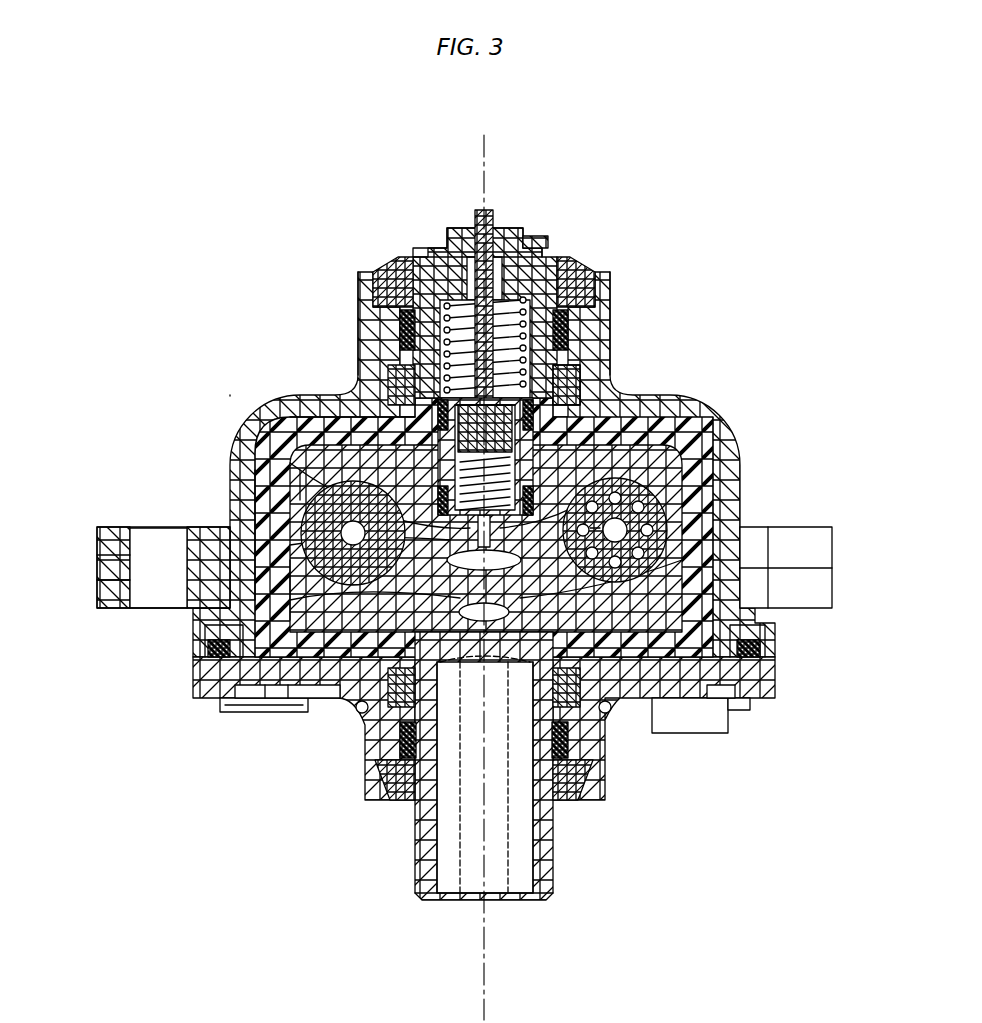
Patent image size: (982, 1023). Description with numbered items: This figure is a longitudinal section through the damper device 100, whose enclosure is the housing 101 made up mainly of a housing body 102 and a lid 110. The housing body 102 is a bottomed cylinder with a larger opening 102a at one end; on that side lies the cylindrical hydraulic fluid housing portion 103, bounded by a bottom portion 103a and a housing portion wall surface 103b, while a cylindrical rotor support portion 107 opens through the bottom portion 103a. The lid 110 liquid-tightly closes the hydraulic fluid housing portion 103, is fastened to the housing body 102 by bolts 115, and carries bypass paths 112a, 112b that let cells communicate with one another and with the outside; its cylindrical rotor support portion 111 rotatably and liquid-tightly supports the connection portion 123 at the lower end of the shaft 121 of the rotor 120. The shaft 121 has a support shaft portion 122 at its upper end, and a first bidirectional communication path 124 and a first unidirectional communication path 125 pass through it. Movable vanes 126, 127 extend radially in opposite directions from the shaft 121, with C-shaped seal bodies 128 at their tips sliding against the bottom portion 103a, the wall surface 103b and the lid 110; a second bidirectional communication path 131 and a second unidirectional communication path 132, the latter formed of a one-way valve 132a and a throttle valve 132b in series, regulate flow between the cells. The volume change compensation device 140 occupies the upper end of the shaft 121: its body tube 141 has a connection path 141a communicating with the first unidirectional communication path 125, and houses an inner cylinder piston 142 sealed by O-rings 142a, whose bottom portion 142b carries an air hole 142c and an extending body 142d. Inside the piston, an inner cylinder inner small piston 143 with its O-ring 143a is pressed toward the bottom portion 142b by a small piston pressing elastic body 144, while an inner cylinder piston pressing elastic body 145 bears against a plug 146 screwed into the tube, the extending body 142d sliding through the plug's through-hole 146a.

The damper device 100 is at (226, 214).
The housing 101 is at (387, 536).
The housing body 102 is at (198, 645).
The opening 102a is at (283, 682).
The hydraulic fluid housing portion 103 is at (760, 640).
The bottom portion 103a is at (330, 424).
The housing portion wall surface 103b is at (272, 530).
The rotor support portion 107 is at (360, 287).
The lid 110 is at (198, 672).
The rotor support portion 111 is at (440, 722).
The bypass path 112a is at (362, 714).
The bypass path 112b is at (582, 714).
The bolt 115 is at (232, 712).
The rotor 120 is at (495, 812).
The shaft 121 is at (556, 872).
The support shaft portion 122 is at (612, 320).
The connection portion 123 is at (440, 882).
The first bidirectional communication path 124 is at (245, 620).
The first unidirectional communication path 125 is at (258, 598).
The movable vane 126 is at (310, 510).
The movable vane 127 is at (820, 568).
The seal body 128 is at (190, 558).
The second bidirectional communication path 131 is at (345, 520).
The second unidirectional communication path 132 is at (722, 511).
The one-way valve 132a is at (605, 505).
The throttle valve 132b is at (640, 512).
The volume change compensation device 140 is at (475, 284).
The body tube 141 is at (402, 326).
The connection path 141a is at (590, 528).
The inner cylinder piston 142 is at (398, 385).
The O-ring 142a is at (512, 435).
The bottom portion 142b is at (582, 390).
The air hole 142c is at (575, 368).
The extending body 142d is at (490, 215).
The inner cylinder inner small piston 143 is at (512, 445).
The O-ring 143a is at (535, 412).
The small piston pressing elastic body 144 is at (182, 522).
The inner cylinder piston pressing elastic body 145 is at (420, 340).
The plug 146 is at (457, 226).
The through-hole 146a is at (530, 237).